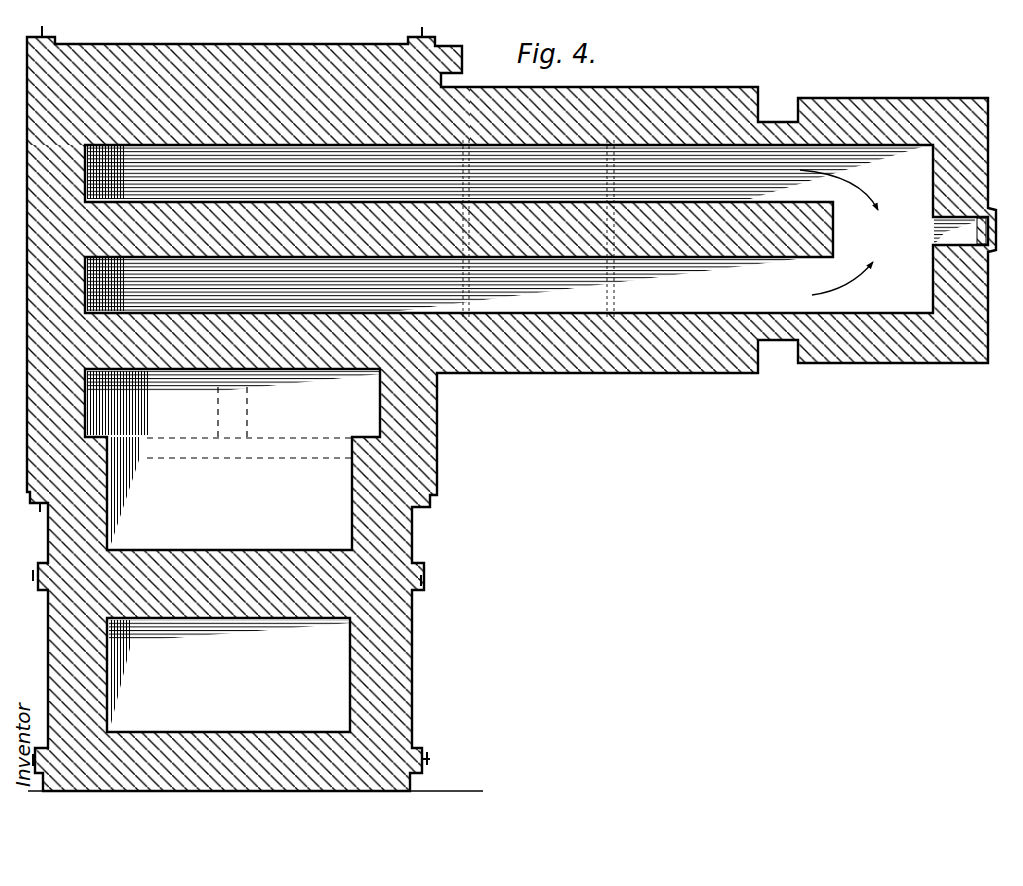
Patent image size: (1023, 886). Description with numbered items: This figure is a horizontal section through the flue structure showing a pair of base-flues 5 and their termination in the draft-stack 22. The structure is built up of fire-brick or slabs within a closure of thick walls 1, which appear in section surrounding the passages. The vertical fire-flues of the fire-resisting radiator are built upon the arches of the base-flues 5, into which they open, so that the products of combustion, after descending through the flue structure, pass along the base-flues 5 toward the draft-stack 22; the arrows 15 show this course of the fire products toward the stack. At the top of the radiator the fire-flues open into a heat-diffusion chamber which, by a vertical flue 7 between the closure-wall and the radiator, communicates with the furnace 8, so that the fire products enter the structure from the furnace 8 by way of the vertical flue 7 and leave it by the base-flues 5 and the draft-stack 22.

The thick walls 1 is at (238, 48).
The base-flues 5 is at (370, 174).
The vertical flue 7 is at (233, 460).
The furnace 8 is at (229, 676).
The arrows 15 is at (846, 237).
The draft-stack 22 is at (927, 232).